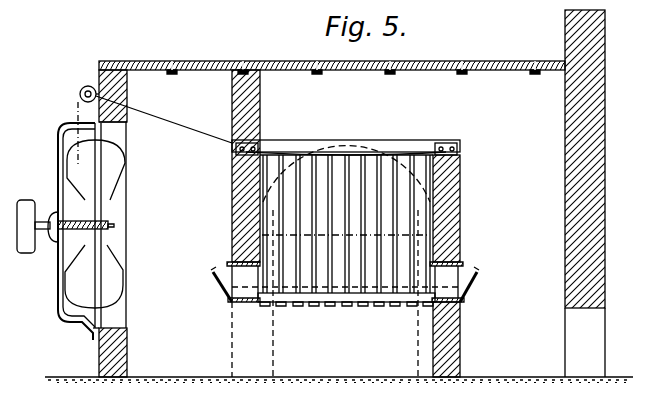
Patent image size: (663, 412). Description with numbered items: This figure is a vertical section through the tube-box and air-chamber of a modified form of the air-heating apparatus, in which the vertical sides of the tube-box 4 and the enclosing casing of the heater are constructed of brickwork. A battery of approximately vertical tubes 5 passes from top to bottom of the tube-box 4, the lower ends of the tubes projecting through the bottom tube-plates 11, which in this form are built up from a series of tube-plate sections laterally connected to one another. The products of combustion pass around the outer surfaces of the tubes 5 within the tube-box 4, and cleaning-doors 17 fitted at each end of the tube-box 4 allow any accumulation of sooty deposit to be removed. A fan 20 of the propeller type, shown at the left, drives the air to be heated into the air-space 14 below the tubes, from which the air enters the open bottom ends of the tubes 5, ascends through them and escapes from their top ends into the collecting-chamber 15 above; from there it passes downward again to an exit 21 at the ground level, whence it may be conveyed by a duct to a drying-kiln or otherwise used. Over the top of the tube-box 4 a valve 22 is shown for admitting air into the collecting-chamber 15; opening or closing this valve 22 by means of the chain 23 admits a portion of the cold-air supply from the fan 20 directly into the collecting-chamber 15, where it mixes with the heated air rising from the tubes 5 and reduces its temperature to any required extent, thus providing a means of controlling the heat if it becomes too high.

The tube-box 4 is at (431, 236).
The tubes 5 is at (346, 224).
The bottom tube-plates 11 is at (393, 303).
The air-space 14 is at (339, 355).
The collecting-chamber 15 is at (332, 91).
The cleaning-doors 17 is at (478, 283).
The fan 20 is at (108, 267).
The exit 21 is at (585, 193).
The valve 22 is at (244, 112).
The chain 23 is at (206, 128).